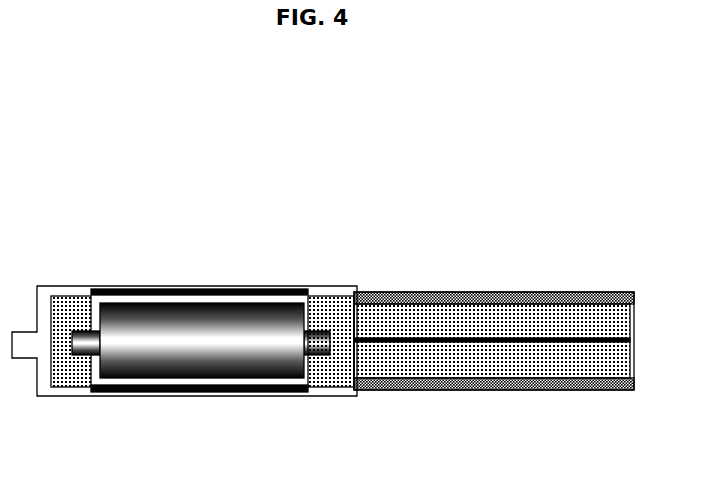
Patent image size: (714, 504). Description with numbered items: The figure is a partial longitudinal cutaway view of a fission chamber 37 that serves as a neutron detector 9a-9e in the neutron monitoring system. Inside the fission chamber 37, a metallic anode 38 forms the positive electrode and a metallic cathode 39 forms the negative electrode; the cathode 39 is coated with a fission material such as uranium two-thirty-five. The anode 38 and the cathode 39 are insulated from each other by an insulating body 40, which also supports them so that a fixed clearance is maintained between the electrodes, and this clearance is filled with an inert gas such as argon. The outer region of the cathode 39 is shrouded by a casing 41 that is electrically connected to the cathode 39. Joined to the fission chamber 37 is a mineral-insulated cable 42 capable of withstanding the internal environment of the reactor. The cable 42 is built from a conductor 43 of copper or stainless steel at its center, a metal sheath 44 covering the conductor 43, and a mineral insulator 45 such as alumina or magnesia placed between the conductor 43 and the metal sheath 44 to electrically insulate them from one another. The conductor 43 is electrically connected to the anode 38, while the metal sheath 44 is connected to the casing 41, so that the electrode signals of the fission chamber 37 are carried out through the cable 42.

The neutron detector 9a-9e is at (395, 190).
The fission chamber 37 is at (137, 398).
The metallic anode 38 is at (137, 315).
The metallic cathode 39 is at (113, 290).
The insulating body 40 is at (70, 296).
The casing 41 is at (313, 287).
The mineral-insulated cable 42 is at (427, 390).
The conductor 43 is at (502, 338).
The metal sheath 44 is at (445, 297).
The mineral insulator 45 is at (372, 312).